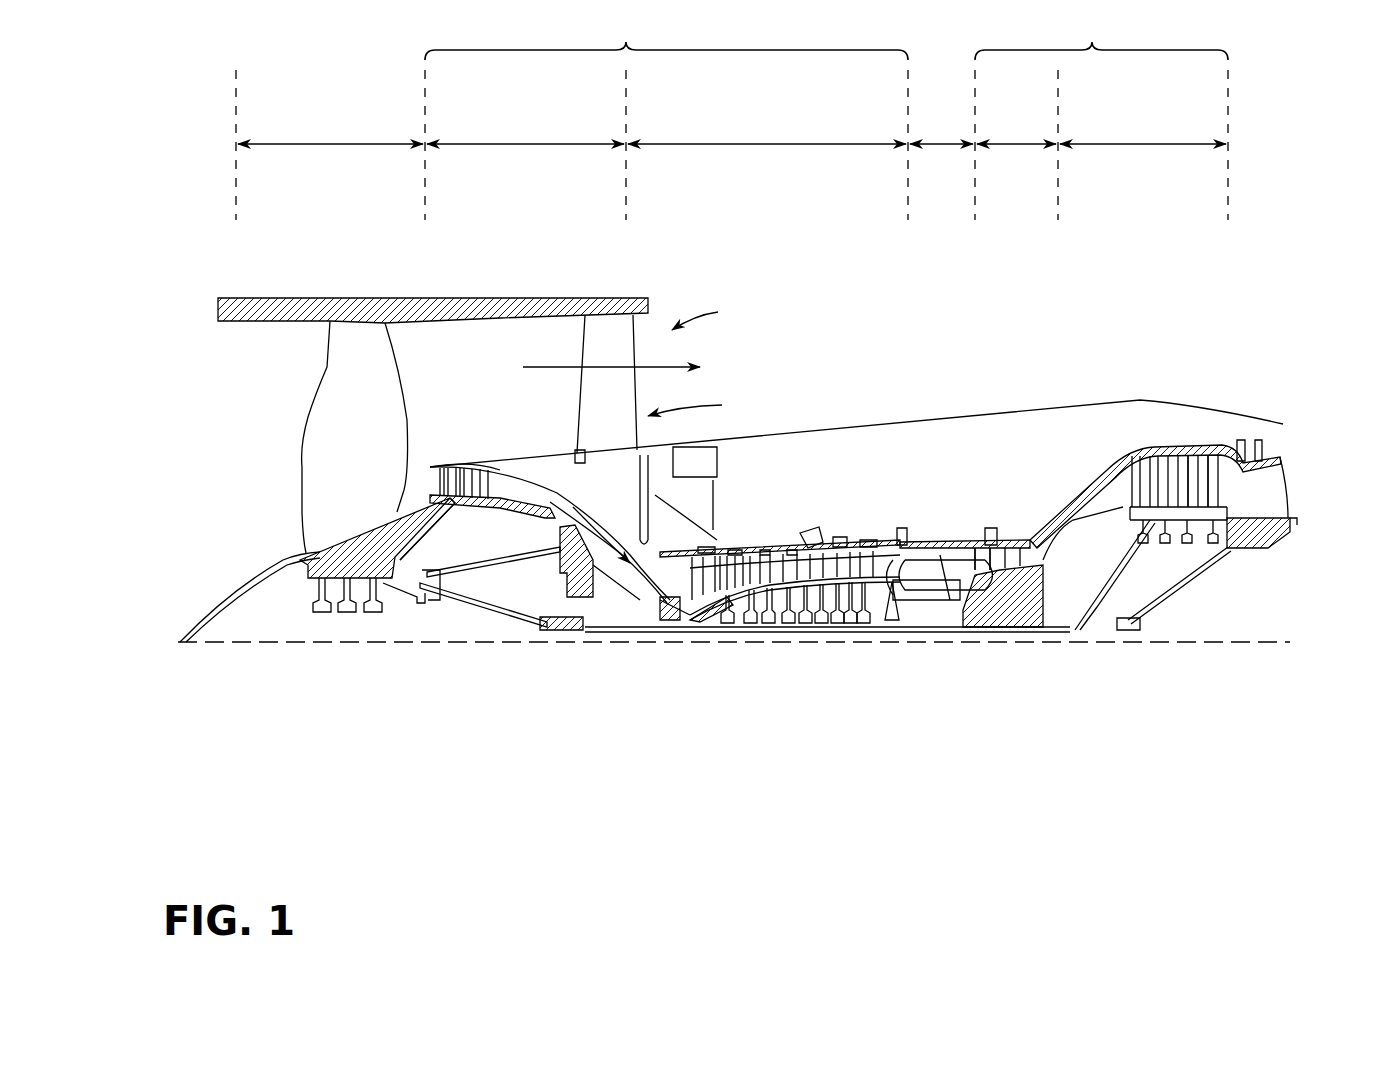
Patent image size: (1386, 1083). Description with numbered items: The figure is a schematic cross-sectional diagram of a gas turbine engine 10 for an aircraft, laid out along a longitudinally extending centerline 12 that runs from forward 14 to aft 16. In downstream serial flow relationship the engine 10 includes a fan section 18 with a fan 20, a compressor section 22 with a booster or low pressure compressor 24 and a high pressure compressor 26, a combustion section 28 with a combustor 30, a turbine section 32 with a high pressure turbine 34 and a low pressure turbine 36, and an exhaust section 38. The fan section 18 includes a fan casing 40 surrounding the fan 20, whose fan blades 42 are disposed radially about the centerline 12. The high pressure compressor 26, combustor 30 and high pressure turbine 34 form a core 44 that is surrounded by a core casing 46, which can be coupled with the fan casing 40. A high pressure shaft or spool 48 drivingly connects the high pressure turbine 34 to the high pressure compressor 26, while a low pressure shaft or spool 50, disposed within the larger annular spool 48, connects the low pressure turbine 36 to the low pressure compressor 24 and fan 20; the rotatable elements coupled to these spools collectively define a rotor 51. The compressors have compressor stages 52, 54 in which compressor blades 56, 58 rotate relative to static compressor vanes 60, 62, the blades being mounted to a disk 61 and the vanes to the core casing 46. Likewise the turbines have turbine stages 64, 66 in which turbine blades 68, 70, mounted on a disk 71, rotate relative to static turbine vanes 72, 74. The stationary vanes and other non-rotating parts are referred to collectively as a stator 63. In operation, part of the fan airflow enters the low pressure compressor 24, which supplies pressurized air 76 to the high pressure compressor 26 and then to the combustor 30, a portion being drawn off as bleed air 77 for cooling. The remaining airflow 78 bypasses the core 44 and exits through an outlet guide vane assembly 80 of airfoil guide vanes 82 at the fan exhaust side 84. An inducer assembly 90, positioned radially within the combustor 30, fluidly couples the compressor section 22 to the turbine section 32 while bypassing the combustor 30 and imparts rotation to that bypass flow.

The gas turbine engine 10 is at (930, 290).
The centerline 12 is at (330, 645).
The forward 14 is at (185, 426).
The aft 16 is at (1308, 503).
The fan section 18 is at (330, 131).
The fan 20 is at (270, 497).
The compressor section 22 is at (666, 37).
The low pressure compressor 24 is at (525, 131).
The high pressure compressor 26 is at (767, 131).
The combustion section 28 is at (941, 126).
The combustor 30 is at (945, 560).
The turbine section 32 is at (1101, 37).
The high pressure turbine 34 is at (1016, 131).
The low pressure turbine 36 is at (1143, 131).
The exhaust section 38 is at (1300, 462).
The fan casing 40 is at (465, 300).
The fan blades 42 is at (400, 370).
The core 44 is at (888, 462).
The core casing 46 is at (1107, 468).
The HP shaft or spool 48 is at (912, 600).
The LP shaft or spool 50 is at (560, 640).
The rotor 51 is at (800, 640).
The compressor stages 52 is at (485, 410).
The compressor stages 54 is at (775, 520).
The compressor blades 56 is at (458, 468).
The compressor blades 58 is at (705, 550).
The static compressor vanes 60 is at (440, 468).
The disk 61 is at (455, 505).
The static compressor vanes 62 is at (720, 517).
The stator 63 is at (680, 610).
The turbine stages 64 is at (972, 470).
The turbine stages 66 is at (1210, 345).
The turbine blades 68 is at (988, 545).
The turbine blades 70 is at (1215, 456).
The disk 71 is at (993, 640).
The static turbine vanes 72 is at (968, 545).
The static turbine vanes 74 is at (1200, 455).
The pressurized air 76 is at (633, 540).
The bleed air 77 is at (800, 535).
The airflow 78 is at (530, 367).
The outlet guide vane assembly 80 is at (703, 405).
The airfoil guide vanes 82 is at (578, 402).
The fan exhaust side 84 is at (708, 313).
The inducer assembly 90 is at (945, 600).